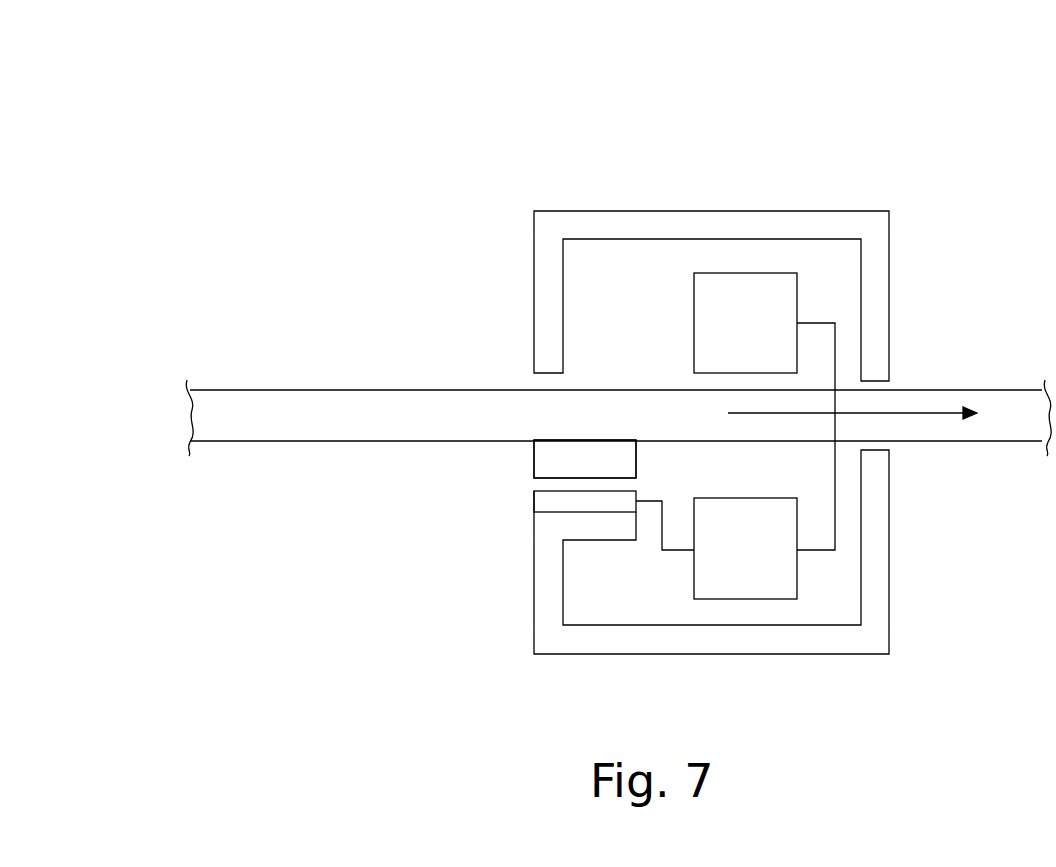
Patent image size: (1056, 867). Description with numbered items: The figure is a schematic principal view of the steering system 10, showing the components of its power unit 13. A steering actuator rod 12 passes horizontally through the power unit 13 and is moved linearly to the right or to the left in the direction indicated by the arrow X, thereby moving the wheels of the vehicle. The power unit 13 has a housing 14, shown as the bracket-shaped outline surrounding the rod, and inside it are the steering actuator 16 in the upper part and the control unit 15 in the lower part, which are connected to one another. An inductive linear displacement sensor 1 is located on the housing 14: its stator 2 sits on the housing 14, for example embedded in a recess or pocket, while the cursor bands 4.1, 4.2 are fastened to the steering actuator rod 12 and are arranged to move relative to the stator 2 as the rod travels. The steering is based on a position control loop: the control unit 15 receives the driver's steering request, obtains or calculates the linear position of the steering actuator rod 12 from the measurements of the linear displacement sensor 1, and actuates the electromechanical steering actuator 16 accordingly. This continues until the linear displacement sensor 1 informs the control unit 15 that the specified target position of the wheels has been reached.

The inductive linear displacement sensor 1 is at (518, 441).
The stator 2 is at (547, 502).
The cursor band 4.1 is at (560, 457).
The cursor band 4.2 is at (585, 459).
The steering system 10 is at (645, 371).
The steering actuator rod 12 is at (340, 390).
The power unit 13 is at (676, 210).
The housing 14 is at (711, 552).
The control unit 15 is at (744, 599).
The steering actuator 16 is at (765, 273).
The flow direction X is at (925, 416).